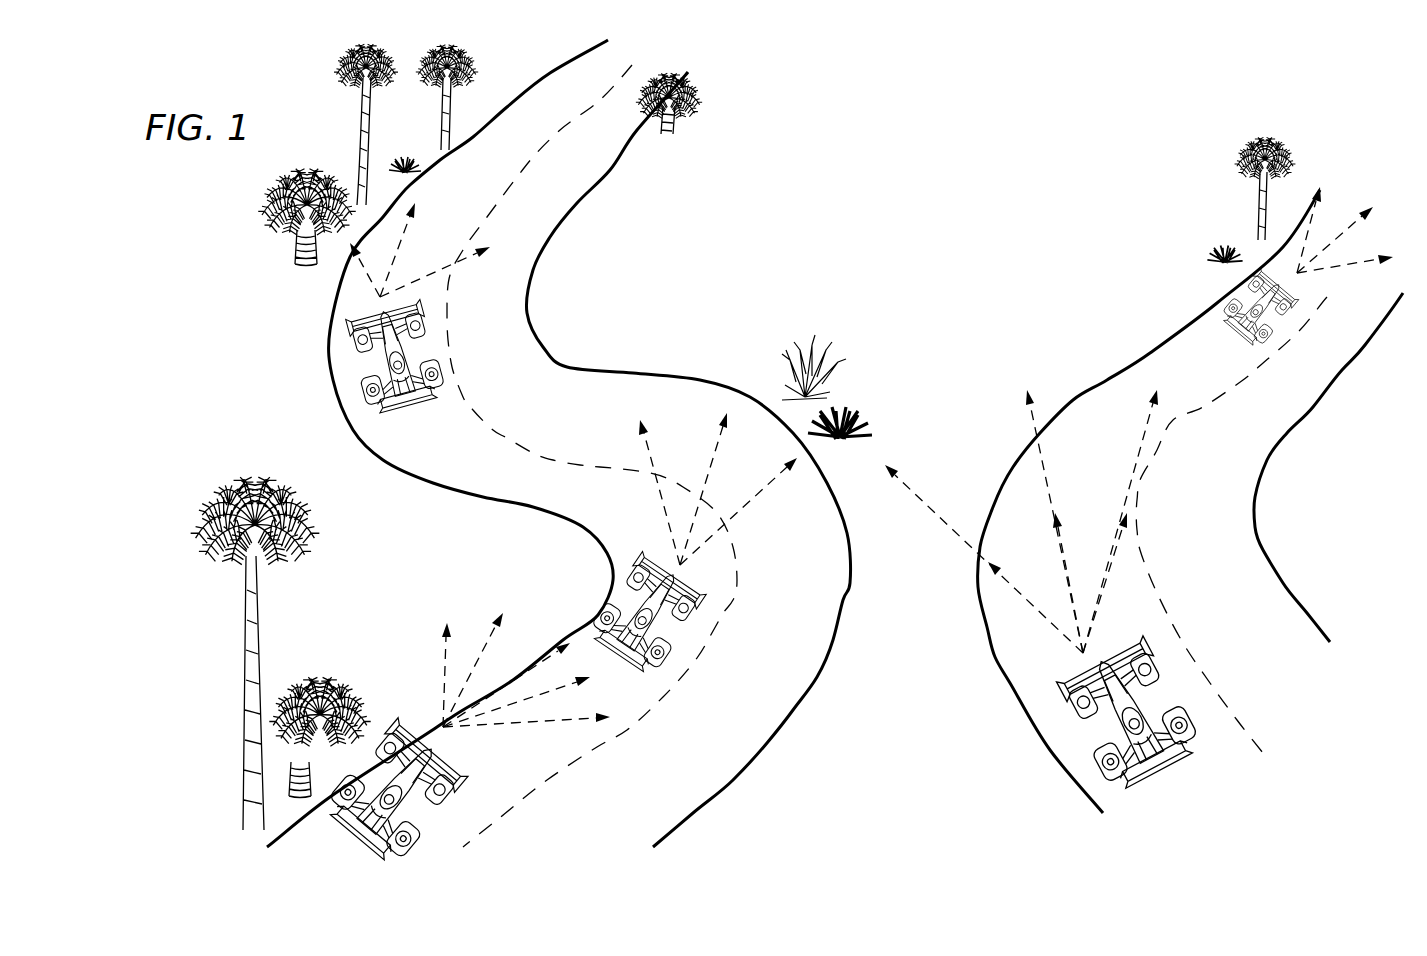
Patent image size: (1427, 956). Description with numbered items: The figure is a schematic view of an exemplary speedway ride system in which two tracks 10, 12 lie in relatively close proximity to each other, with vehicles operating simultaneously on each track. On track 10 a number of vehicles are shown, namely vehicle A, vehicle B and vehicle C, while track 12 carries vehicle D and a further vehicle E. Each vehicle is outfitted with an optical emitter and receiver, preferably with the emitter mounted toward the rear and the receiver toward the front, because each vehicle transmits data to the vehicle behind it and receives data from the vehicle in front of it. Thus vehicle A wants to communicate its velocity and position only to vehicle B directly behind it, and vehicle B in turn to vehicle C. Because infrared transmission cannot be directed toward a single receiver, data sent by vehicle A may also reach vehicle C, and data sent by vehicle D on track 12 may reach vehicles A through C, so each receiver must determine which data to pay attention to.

The track 10 is at (570, 181).
The track 12 is at (1163, 358).
The vehicle A is at (465, 740).
The vehicle B is at (691, 545).
The vehicle C is at (417, 309).
The vehicle D is at (1044, 596).
The race car at position E is at (1305, 269).